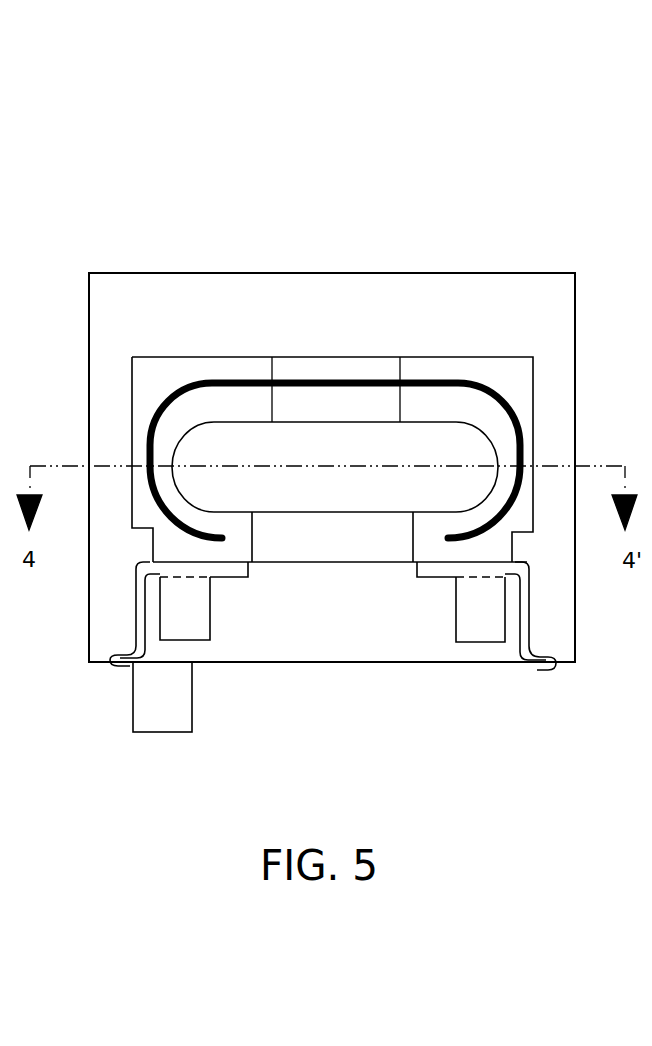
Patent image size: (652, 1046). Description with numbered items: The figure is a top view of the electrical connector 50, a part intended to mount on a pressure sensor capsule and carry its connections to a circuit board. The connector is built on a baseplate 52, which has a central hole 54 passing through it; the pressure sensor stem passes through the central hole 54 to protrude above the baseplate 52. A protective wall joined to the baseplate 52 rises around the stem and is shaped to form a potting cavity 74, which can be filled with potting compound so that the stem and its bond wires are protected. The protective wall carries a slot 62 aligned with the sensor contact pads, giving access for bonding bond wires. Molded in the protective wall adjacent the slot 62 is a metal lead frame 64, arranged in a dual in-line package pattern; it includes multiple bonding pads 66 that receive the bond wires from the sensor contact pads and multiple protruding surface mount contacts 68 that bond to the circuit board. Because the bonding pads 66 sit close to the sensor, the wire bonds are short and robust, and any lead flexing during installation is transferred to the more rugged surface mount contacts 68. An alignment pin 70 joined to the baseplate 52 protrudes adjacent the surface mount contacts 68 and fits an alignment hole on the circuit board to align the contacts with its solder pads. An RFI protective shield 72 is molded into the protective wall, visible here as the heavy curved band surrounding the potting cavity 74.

The electrical connector 50 is at (302, 441).
The baseplate 52 is at (504, 334).
The central hole 54 is at (335, 467).
The slot 62 is at (324, 557).
The metal lead frame 64 is at (183, 575).
The bonding pads 66 is at (233, 576).
The surface mount contacts 68 is at (120, 664).
The alignment pin 70 is at (148, 732).
The RFI protective shield 72 is at (312, 380).
The potting cavity 74 is at (216, 480).